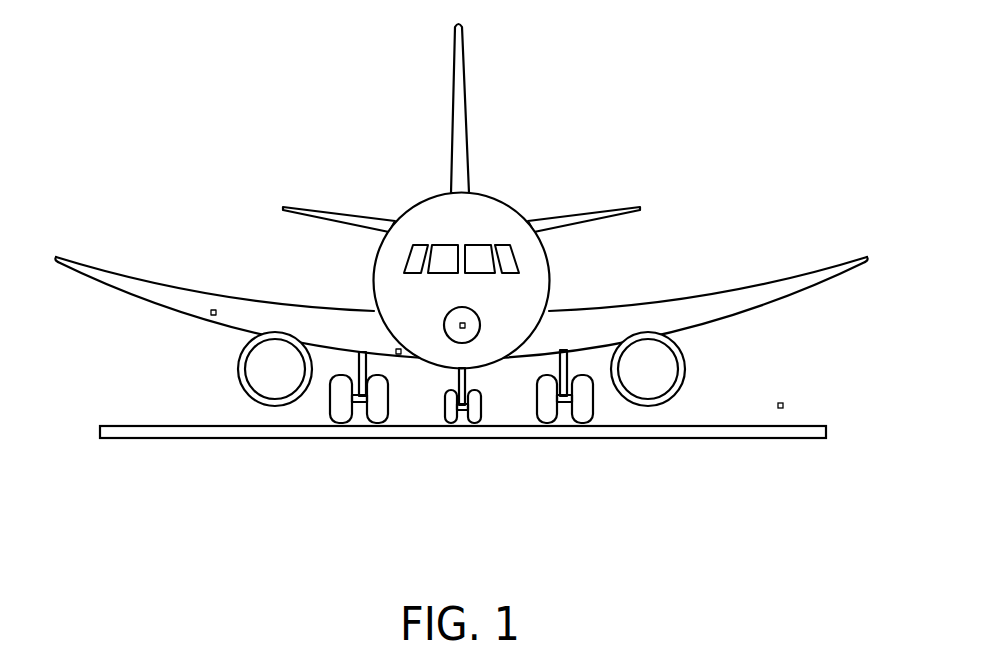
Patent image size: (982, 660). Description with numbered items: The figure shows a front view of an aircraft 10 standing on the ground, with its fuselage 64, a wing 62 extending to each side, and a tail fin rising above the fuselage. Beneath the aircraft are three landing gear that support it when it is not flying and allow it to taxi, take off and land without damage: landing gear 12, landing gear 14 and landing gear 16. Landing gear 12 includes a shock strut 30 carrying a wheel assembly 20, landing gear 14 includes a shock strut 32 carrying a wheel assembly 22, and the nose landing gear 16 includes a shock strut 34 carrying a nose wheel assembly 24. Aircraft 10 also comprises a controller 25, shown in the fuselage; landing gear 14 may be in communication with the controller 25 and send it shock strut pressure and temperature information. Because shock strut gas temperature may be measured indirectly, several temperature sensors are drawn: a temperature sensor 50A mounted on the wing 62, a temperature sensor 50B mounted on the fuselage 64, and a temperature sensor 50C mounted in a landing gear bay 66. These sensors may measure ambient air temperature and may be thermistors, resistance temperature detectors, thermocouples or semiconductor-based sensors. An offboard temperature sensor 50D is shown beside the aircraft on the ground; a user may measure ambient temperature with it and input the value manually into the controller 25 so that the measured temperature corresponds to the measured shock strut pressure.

The aircraft 10 is at (303, 108).
The landing gear 12 is at (634, 437).
The landing gear 14 is at (286, 448).
The landing gear 16 is at (515, 408).
The wheel assembly 20 is at (563, 413).
The wheel assembly 22 is at (358, 410).
The nose wheel assembly 24 is at (462, 413).
The controller 25 is at (430, 336).
The shock strut 30 is at (557, 363).
The shock strut 32 is at (367, 363).
The shock strut 34 is at (460, 372).
The temperature sensor 50A is at (214, 310).
The temperature sensor 50B is at (465, 324).
The temperature sensor 50C is at (395, 350).
The offboard temperature sensor 50D is at (783, 404).
The wing 62 is at (147, 290).
The fuselage 64 is at (507, 206).
The landing gear bay 66 is at (404, 354).